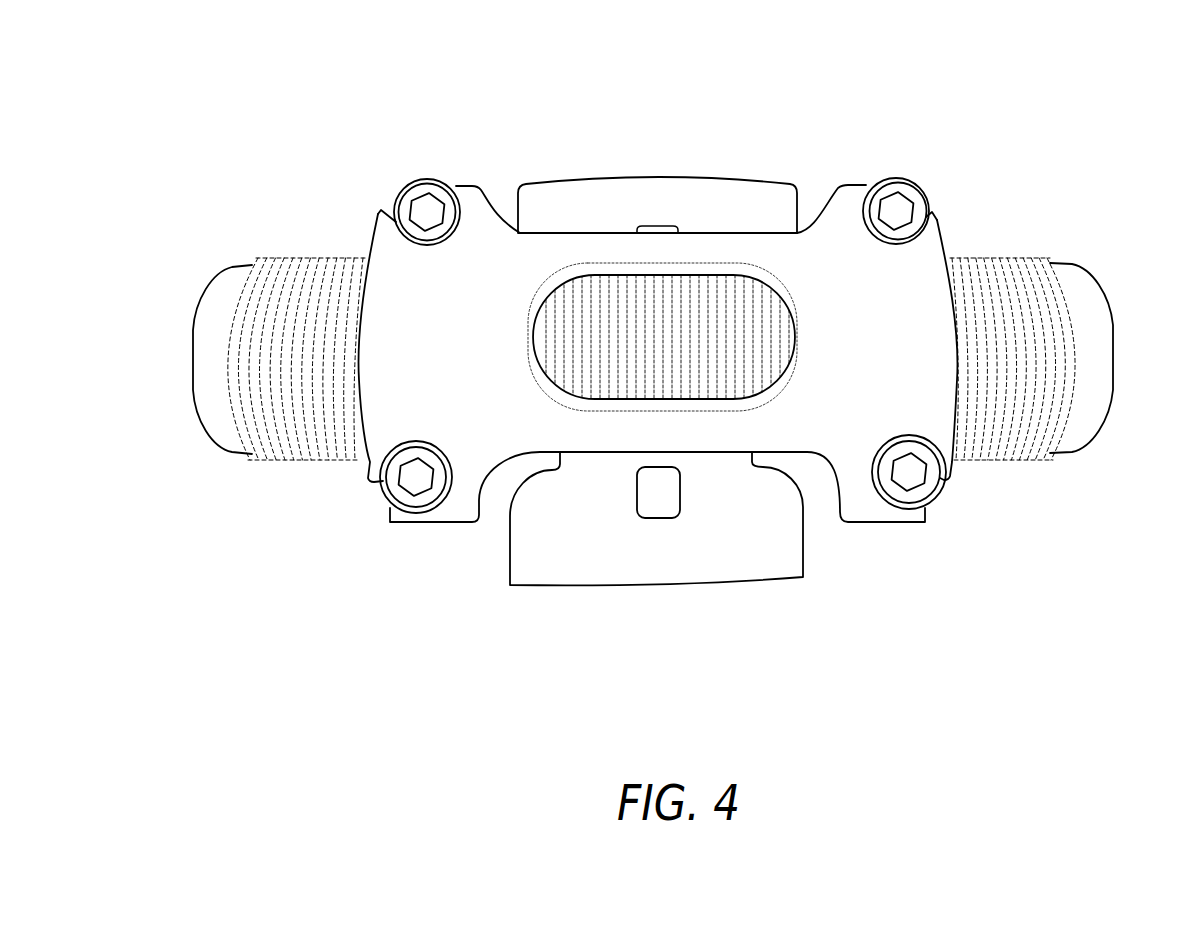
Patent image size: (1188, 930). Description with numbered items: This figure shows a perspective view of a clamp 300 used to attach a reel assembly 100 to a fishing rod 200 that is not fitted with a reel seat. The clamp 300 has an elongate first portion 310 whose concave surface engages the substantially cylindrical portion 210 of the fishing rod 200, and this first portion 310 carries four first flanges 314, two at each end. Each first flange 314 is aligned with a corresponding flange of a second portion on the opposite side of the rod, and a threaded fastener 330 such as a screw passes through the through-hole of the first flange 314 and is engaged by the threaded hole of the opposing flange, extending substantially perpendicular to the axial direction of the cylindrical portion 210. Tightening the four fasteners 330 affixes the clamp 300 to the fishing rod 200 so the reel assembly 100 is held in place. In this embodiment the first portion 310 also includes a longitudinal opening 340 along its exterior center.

The reel assembly 100 is at (706, 138).
The fishing rod 200 is at (282, 230).
The substantially cylindrical portion 210 is at (300, 420).
The clamp 300 is at (1002, 124).
The first portion 310 is at (430, 305).
The first flanges 314 is at (470, 220).
The fasteners 330 is at (426, 207).
The longitudinal opening 340 is at (641, 312).